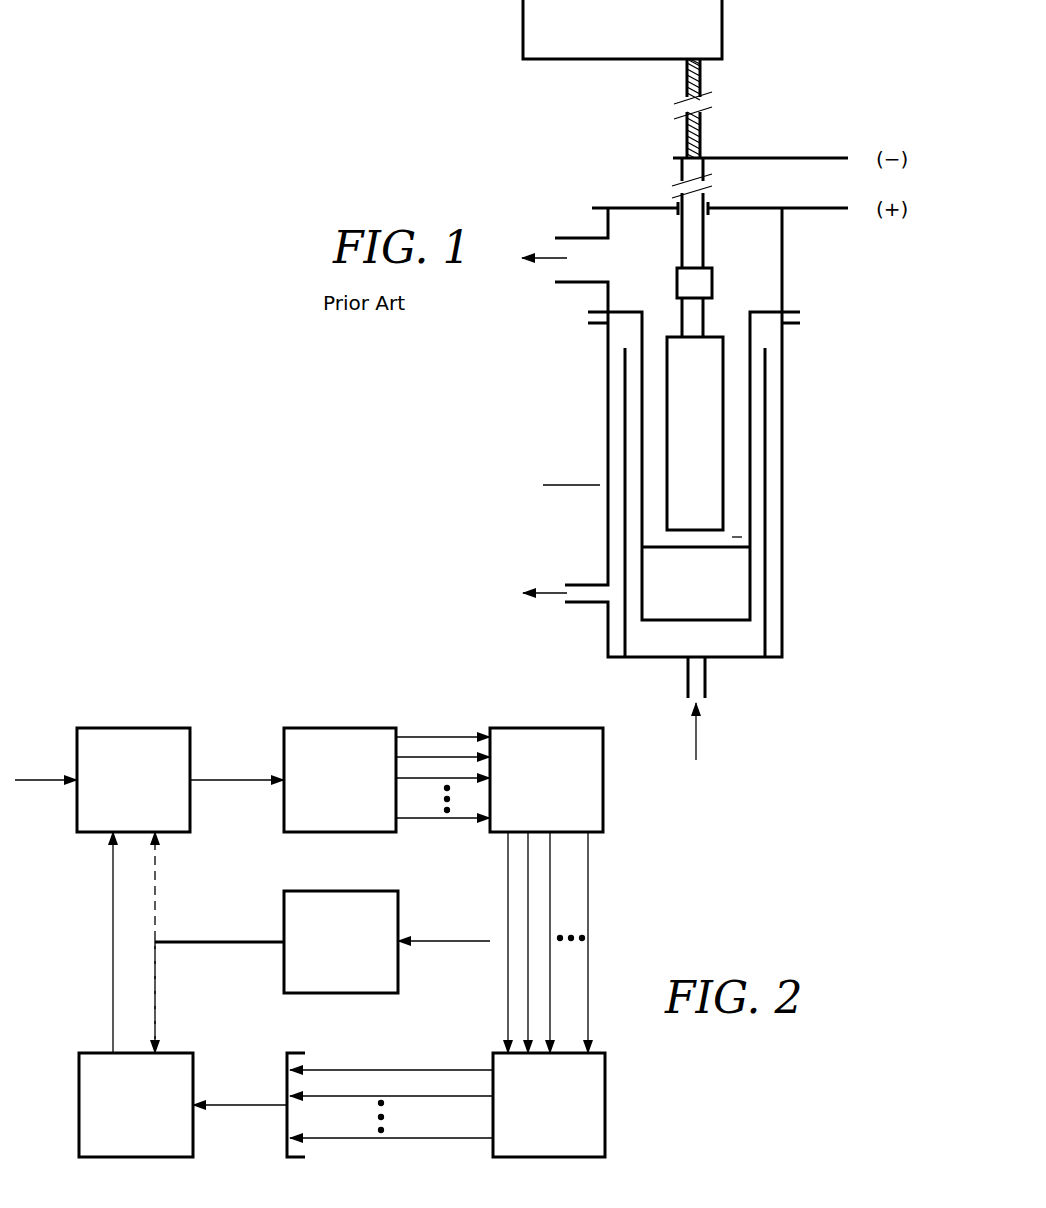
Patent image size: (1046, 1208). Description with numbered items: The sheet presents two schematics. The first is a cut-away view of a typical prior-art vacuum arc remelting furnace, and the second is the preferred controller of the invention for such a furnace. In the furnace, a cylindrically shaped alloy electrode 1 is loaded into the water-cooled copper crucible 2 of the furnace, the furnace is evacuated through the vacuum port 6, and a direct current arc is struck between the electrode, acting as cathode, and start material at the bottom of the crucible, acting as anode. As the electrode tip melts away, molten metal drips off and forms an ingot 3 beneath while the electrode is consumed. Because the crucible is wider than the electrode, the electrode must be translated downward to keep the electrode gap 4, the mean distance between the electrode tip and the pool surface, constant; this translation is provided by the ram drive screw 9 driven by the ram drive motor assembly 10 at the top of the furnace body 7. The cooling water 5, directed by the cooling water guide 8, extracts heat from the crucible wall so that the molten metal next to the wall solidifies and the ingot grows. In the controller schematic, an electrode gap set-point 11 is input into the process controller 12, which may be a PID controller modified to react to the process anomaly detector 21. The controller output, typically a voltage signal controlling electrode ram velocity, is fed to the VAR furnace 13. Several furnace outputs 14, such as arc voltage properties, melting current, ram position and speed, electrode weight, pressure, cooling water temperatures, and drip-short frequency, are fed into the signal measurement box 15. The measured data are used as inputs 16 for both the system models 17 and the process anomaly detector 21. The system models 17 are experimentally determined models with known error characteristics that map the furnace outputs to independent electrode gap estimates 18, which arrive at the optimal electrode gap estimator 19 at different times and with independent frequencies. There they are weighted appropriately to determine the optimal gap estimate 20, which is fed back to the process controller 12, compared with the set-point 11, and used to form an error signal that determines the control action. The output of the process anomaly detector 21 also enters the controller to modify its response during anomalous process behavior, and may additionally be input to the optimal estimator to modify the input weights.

In FIG. 1, the alloy electrode 1 is at (695, 433).
In FIG. 1, the copper crucible 2 is at (750, 333).
In FIG. 1, the ingot 3 is at (696, 568).
In FIG. 1, the electrode gap 4 is at (742, 537).
In FIG. 1, the cooling water 5 is at (696, 693).
In FIG. 1, the vacuum port 6 is at (685, 407).
In FIG. 1, the furnace body 7 is at (573, 485).
In FIG. 1, the cooling water guide 8 is at (767, 457).
In FIG. 1, the ram drive screw 9 is at (712, 92).
In FIG. 1, the ram drive motor assembly 10 is at (622, 29).
In FIG. 2, the electrode gap set-point 11 is at (32, 780).
In FIG. 2, the process controller 12 is at (133, 780).
In FIG. 2, the VAR furnace 13 is at (293, 780).
In FIG. 2, the furnace outputs 14 is at (415, 733).
In FIG. 2, the signal measurement box 15 is at (546, 780).
In FIG. 2, the inputs 16 is at (588, 934).
In FIG. 2, the system models 17 is at (549, 1105).
In FIG. 2, the electrode gap estimates 18 is at (432, 1068).
In FIG. 2, the optimal electrode gap estimator 19 is at (183, 1105).
In FIG. 2, the optimal gap estimate 20 is at (113, 935).
In FIG. 2, the process anomaly detector 21 is at (276, 942).